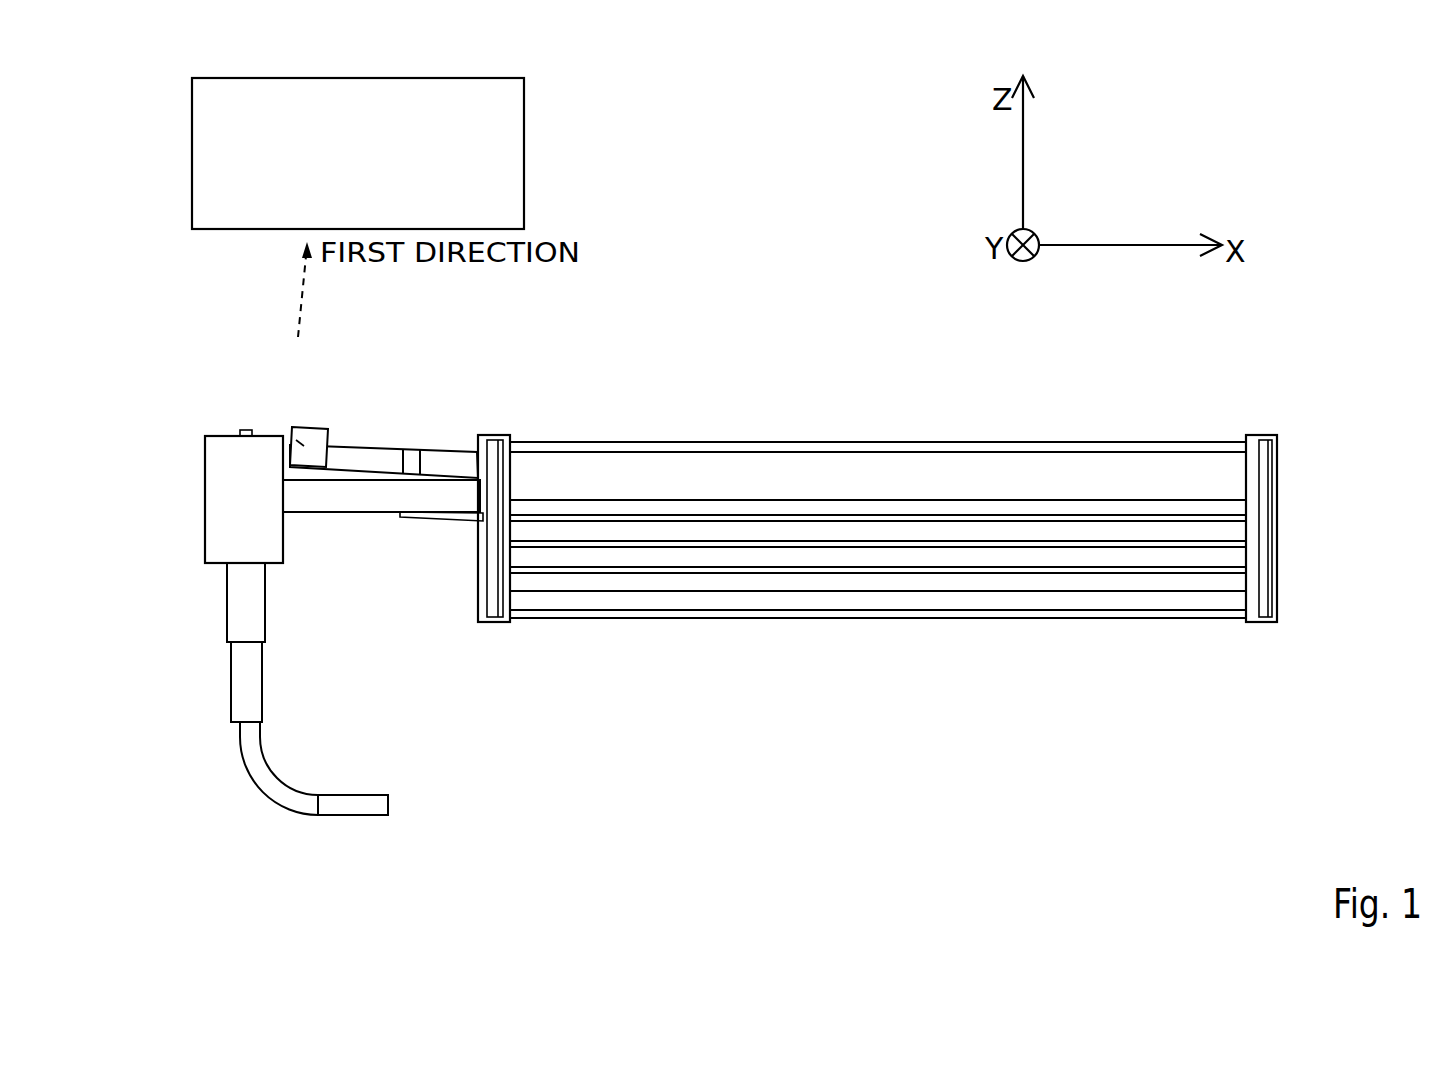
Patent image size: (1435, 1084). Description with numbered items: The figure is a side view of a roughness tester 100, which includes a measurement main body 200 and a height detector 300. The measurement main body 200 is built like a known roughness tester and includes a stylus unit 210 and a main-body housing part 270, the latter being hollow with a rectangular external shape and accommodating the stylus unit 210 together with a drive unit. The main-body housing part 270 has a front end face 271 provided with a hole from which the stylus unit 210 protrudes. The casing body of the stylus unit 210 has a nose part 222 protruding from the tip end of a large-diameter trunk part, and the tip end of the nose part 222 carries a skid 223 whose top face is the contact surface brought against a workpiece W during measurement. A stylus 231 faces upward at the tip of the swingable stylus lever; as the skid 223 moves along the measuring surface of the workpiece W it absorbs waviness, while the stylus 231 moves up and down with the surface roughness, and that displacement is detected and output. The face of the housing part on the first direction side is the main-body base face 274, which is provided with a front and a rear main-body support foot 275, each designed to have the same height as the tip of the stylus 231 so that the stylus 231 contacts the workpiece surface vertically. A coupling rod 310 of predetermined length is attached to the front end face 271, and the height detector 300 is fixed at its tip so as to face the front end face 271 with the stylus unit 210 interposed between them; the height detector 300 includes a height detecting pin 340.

The workpiece W is at (196, 181).
The roughness tester 100 is at (786, 370).
The measurement main body 200 is at (950, 465).
The stylus unit 210 is at (432, 450).
The nose part 222 is at (407, 447).
The skid 223 is at (300, 443).
The stylus 231 is at (306, 412).
The main-body housing part 270 is at (912, 598).
The front end face 271 is at (478, 562).
The main-body base face 274 is at (663, 441).
The main-body support foot 275 is at (512, 442).
The height detector 300 is at (212, 484).
The coupling rod 310 is at (390, 498).
The height detecting pin 340 is at (240, 428).